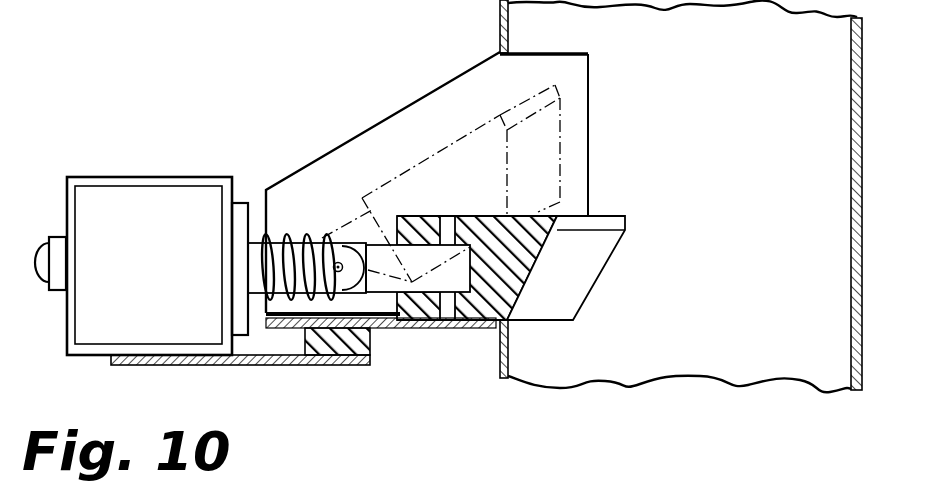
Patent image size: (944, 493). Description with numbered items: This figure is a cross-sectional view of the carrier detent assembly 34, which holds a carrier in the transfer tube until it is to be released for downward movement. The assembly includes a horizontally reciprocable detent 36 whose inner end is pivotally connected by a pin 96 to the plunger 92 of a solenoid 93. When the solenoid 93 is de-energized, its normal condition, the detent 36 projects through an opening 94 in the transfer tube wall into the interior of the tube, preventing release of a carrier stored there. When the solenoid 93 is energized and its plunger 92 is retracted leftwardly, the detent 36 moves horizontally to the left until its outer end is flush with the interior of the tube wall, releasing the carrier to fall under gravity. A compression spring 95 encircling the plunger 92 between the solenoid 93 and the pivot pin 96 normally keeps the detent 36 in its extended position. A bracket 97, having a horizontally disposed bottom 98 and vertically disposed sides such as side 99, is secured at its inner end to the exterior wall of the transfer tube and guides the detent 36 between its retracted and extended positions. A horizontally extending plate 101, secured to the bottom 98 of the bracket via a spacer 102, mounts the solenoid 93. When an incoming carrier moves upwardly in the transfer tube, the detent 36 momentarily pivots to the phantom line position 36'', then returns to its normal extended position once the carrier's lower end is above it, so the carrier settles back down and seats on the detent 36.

The carrier detent assembly 34 is at (322, 392).
The detent 36 is at (540, 259).
The phantom line position of detent 36'' is at (492, 183).
The plunger 92 is at (233, 271).
The solenoid 93 is at (133, 266).
The opening 94 is at (533, 62).
The compression spring 95 is at (284, 242).
The pin 96 is at (348, 260).
The bracket 97 is at (425, 332).
The bottom 98 is at (473, 329).
The side 99 is at (412, 118).
The plate 101 is at (170, 365).
The spacer 102 is at (370, 343).